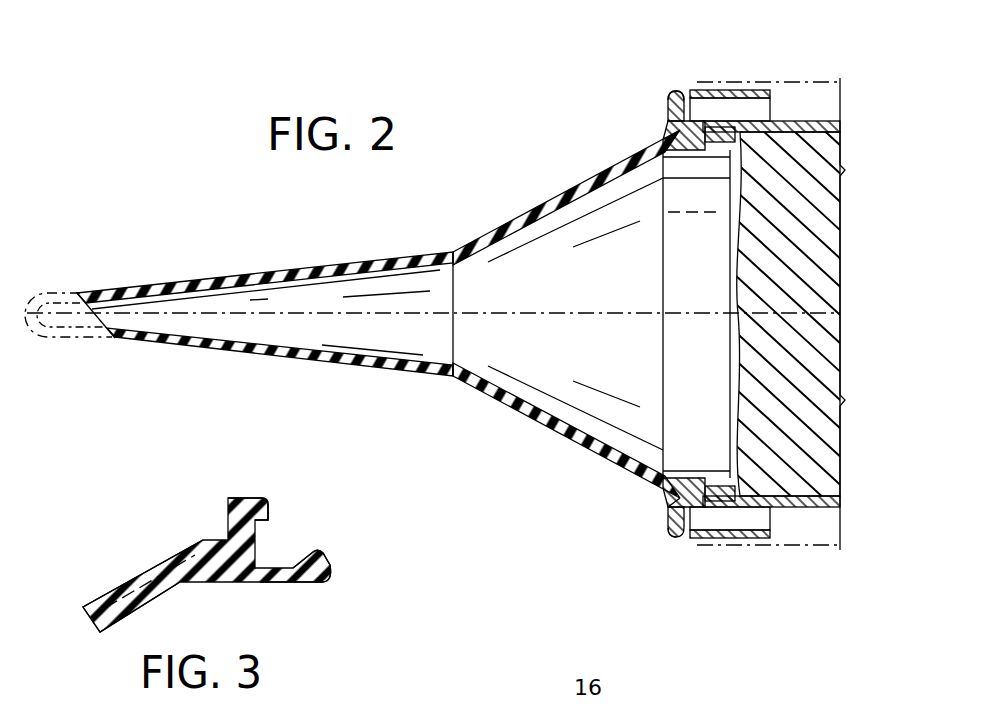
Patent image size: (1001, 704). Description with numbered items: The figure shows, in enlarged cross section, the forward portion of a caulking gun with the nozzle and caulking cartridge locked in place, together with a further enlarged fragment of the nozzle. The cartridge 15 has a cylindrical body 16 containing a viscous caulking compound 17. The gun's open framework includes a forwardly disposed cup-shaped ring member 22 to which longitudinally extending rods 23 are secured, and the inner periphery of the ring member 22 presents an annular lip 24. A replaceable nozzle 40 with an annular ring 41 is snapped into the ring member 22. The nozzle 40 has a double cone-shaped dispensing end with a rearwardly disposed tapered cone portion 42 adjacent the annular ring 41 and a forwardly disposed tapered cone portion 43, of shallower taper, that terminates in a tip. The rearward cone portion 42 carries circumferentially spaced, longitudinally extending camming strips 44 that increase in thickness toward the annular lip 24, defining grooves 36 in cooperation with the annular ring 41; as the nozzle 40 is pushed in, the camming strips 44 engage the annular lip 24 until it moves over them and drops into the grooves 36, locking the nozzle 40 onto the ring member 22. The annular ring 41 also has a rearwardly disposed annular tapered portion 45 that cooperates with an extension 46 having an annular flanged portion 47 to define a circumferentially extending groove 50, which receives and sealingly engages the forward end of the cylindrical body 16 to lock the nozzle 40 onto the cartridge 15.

In FIG. 2, the cartridge 15 is at (790, 507).
In FIG. 2, the cylindrical body 16 is at (790, 100).
In FIG. 2, the caulking compound 17 is at (750, 358).
In FIG. 2, the ring member 22 is at (681, 538).
In FIG. 2, the rods 23 is at (808, 84).
In FIG. 2, the annular lip 24 is at (676, 505).
In FIG. 2, the grooves 36 is at (670, 96).
In FIG. 3, the grooves 36 is at (213, 540).
In FIG. 2, the nozzle 40 is at (468, 392).
In FIG. 2, the annular ring 41 is at (681, 92).
In FIG. 3, the annular ring 41 is at (240, 502).
In FIG. 2, the rearwardly disposed tapered cone portion 42 is at (565, 447).
In FIG. 2, the forwardly disposed tapered cone portion 43 is at (283, 356).
In FIG. 2, the camming strips 44 is at (635, 147).
In FIG. 3, the camming strips 44 is at (160, 556).
In FIG. 2, the annular tapered portion 45 is at (705, 515).
In FIG. 3, the annular tapered portion 45 is at (268, 503).
In FIG. 3, the extension 46 is at (305, 588).
In FIG. 3, the annular flanged portion 47 is at (320, 548).
In FIG. 3, the groove 50 is at (300, 555).